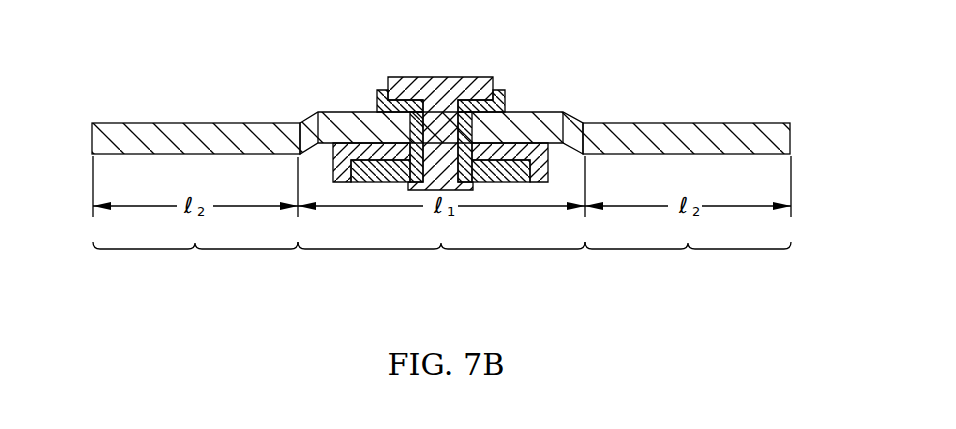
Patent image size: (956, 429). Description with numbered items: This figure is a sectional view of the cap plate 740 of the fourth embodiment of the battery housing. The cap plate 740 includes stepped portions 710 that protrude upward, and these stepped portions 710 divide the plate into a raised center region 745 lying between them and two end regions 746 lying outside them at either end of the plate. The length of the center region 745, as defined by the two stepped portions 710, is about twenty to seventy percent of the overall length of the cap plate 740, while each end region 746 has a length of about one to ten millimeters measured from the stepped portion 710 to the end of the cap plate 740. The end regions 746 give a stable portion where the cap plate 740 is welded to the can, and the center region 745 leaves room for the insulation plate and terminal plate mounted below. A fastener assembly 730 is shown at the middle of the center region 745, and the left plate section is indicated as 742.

The stepped portion 710 is at (305, 117).
The bolt fastener assembly 730 is at (442, 110).
The cap plate 740 is at (758, 133).
The left plate 742 is at (235, 133).
The center region 745 is at (441, 264).
The end region 746 is at (442, 264).